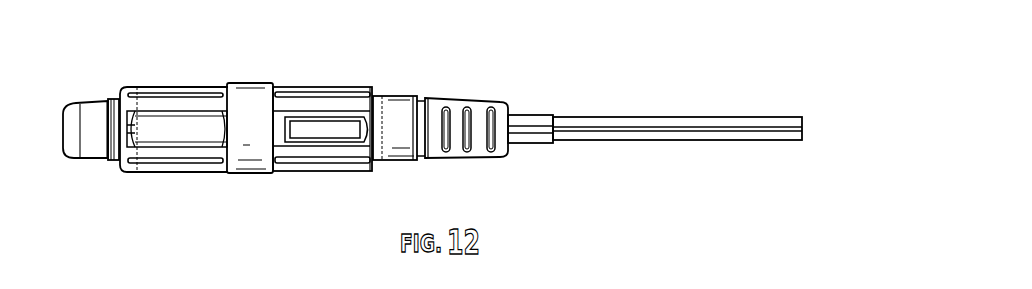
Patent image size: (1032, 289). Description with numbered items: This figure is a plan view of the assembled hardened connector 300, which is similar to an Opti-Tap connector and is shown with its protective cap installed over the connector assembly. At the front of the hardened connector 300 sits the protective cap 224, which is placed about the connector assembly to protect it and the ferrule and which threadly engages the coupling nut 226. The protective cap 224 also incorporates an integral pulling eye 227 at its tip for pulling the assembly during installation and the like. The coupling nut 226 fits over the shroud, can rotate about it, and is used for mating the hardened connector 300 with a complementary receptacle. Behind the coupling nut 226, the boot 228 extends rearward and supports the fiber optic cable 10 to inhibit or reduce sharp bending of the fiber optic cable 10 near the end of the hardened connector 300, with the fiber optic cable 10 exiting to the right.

The hardened connector 300 is at (427, 63).
The integral pulling eye 227 is at (90, 159).
The protective cap 224 is at (137, 86).
The coupling nut 226 is at (331, 86).
The boot 228 is at (479, 97).
The fiber optic cable 10 is at (670, 116).